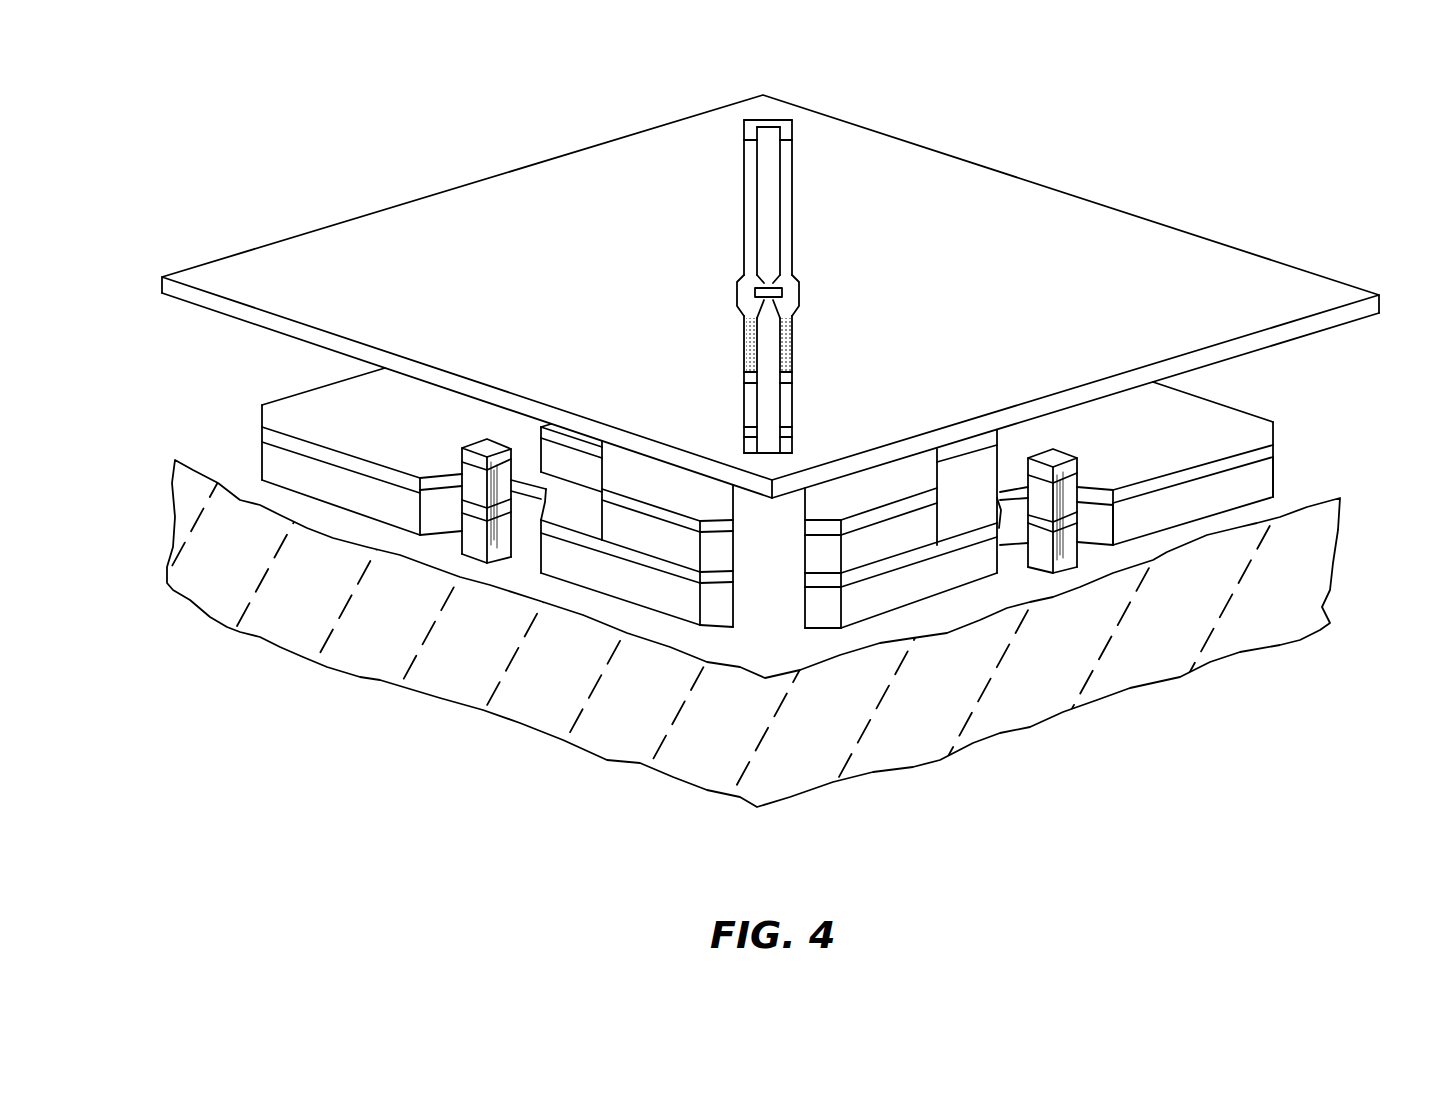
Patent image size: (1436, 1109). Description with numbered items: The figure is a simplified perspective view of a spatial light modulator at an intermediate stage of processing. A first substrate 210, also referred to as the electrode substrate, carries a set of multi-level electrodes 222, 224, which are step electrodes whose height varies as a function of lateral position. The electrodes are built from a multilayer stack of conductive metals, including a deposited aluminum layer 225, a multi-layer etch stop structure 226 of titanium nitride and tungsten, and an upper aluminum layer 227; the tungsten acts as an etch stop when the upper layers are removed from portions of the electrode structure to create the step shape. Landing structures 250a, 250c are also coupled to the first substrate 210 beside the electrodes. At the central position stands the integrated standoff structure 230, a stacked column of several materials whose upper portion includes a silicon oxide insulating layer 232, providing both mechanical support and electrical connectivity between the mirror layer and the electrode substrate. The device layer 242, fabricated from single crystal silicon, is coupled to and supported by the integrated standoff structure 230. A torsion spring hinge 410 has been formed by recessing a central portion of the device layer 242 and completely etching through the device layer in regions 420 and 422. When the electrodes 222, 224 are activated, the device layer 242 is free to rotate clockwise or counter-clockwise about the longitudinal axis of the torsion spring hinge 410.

The first substrate 210 is at (307, 595).
The multi-level electrode 222 is at (584, 628).
The multi-level electrode 224 is at (948, 645).
The deposited aluminum layer 225 is at (1155, 517).
The multi-layer etch stop structure 226 is at (1205, 420).
The aluminum layer 227 is at (906, 556).
The integrated standoff structure 230 is at (738, 405).
The insulating layer 232 is at (787, 347).
The device layer 242 is at (1312, 325).
The landing structure 250a is at (486, 572).
The landing structure 250c is at (1070, 600).
The torsion spring hinge 410 is at (767, 143).
The region 420 is at (752, 250).
The region 422 is at (786, 247).